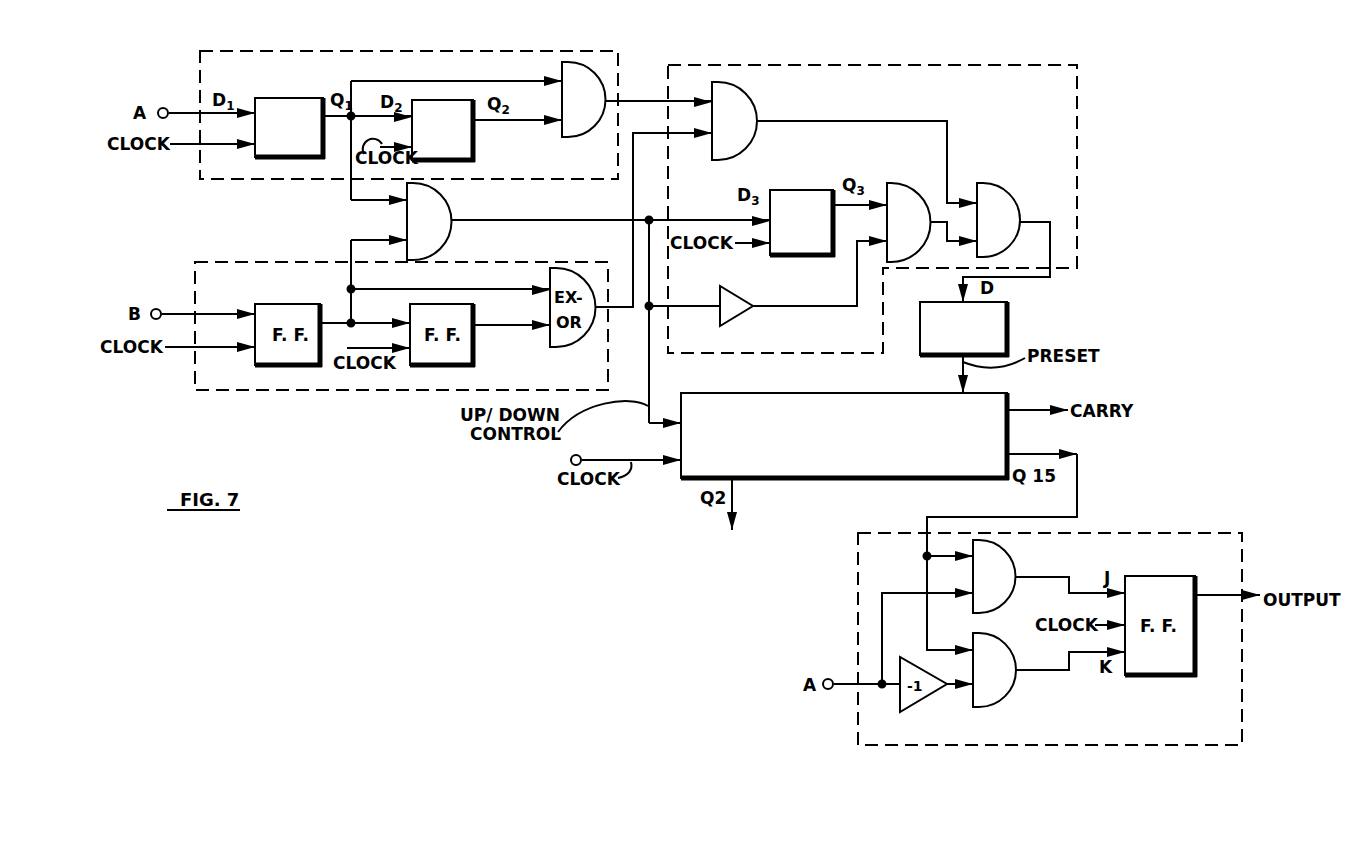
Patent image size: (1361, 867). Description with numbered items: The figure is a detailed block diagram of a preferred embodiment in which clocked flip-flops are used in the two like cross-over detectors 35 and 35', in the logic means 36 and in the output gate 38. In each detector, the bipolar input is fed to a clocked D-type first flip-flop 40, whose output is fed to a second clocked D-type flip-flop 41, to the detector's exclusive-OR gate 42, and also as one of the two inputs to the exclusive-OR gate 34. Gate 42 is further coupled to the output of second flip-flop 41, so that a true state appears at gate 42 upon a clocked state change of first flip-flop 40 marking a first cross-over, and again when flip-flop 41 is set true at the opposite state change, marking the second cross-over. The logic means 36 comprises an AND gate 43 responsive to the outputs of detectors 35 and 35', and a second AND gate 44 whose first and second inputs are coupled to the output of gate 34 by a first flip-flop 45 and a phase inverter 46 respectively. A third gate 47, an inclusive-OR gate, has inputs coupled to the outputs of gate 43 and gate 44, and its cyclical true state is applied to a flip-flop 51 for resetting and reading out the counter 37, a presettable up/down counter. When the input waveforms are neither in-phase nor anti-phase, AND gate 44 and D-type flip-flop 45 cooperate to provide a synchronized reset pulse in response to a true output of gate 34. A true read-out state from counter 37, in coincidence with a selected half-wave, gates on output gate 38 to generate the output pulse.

The exclusive-OR gate 34 is at (438, 203).
The cross-over detector 35 is at (381, 91).
The cross-over detector 35' is at (401, 339).
The logic means 36 is at (1052, 121).
The counter 37 is at (810, 458).
The output gate 38 is at (983, 718).
The first flip-flop 40 is at (283, 112).
The second flip-flop 41 is at (456, 152).
The exclusive-OR gate 42 is at (583, 131).
The AND gate 43 is at (405, 81).
The second AND gate 44 is at (900, 207).
The first flip-flop 45 is at (798, 208).
The phase inverter 46 is at (736, 300).
The third gate 47 is at (990, 206).
The flip-flop 51 is at (995, 336).